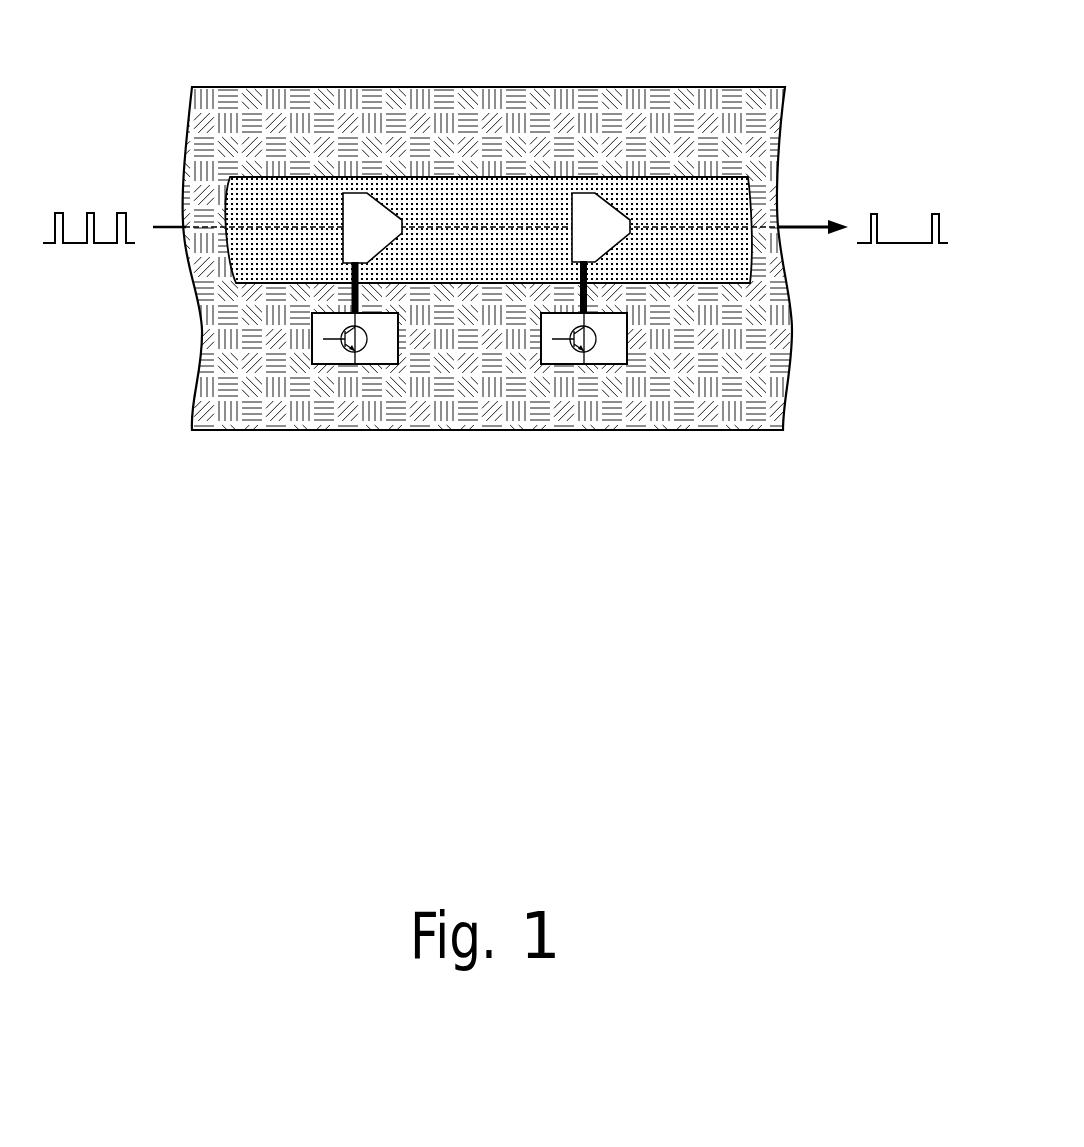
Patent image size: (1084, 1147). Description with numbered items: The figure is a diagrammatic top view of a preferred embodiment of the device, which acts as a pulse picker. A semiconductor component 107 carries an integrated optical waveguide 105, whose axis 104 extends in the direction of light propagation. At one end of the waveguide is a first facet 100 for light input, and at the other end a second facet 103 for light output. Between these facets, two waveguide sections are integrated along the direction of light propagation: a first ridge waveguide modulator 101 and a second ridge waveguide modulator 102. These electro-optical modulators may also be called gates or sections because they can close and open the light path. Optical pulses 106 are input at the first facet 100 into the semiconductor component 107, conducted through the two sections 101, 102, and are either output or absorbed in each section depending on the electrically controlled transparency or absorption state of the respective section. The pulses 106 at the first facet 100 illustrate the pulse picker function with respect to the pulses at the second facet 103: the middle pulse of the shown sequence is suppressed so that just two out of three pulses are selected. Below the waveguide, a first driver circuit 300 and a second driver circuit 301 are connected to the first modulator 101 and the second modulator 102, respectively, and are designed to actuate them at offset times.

The first facet 100 is at (186, 222).
The first ridge waveguide modulator 101 is at (360, 212).
The second ridge waveguide modulator 102 is at (595, 212).
The second facet 103 is at (780, 226).
The axis 104 is at (680, 228).
The optical waveguide 105 is at (700, 197).
The pulses 106 is at (98, 228).
The semiconductor component 107 is at (481, 115).
The first driver circuit 300 is at (382, 351).
The second driver circuit 301 is at (612, 350).